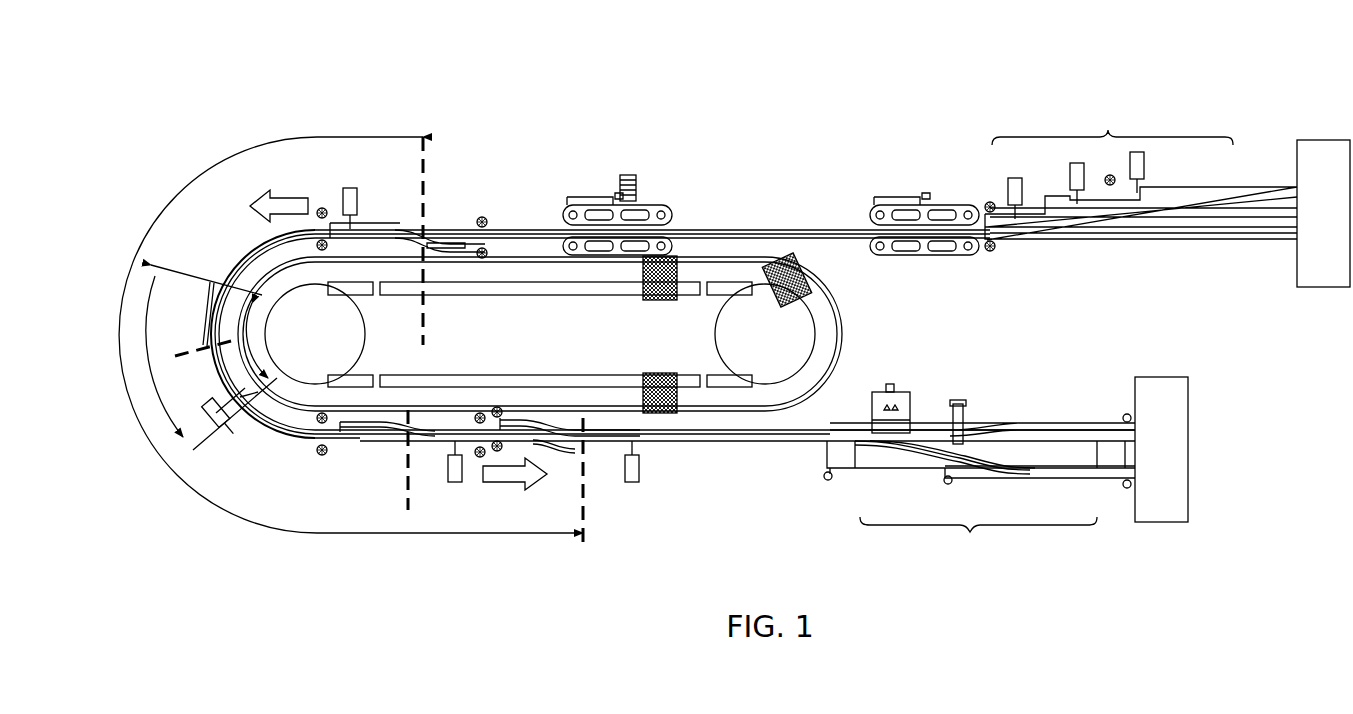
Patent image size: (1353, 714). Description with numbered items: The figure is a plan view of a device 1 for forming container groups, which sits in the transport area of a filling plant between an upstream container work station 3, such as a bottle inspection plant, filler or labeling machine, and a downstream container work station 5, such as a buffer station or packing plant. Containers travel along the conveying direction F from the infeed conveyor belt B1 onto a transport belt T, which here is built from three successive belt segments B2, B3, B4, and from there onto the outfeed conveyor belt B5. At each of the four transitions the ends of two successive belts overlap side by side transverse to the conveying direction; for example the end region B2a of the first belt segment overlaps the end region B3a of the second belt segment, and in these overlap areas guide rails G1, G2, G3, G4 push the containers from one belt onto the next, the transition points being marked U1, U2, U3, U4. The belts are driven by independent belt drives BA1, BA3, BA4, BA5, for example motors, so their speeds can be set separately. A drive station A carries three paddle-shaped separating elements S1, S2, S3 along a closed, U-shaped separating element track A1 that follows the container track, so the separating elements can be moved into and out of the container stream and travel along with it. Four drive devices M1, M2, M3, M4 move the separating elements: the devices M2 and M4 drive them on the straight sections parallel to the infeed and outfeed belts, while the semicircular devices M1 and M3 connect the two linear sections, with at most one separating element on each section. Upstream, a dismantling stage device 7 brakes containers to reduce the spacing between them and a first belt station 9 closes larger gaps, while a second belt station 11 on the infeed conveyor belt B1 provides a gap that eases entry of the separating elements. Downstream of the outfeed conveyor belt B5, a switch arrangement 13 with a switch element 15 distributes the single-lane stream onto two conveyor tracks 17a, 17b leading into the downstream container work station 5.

The device 1 is at (300, 97).
The upstream container work station 3 is at (1318, 152).
The downstream container work station 5 is at (1152, 384).
The dismantling stage device 7 is at (1141, 175).
The first belt station 9 is at (960, 206).
The second belt station 11 is at (652, 206).
The switch arrangement 13 is at (979, 499).
The switch element 15 is at (936, 428).
The conveyor track 17a is at (1116, 480).
The conveyor track 17b is at (1050, 422).
The drive station A is at (712, 340).
The separating element track A1 is at (832, 290).
The infeed conveyor belt B1 is at (514, 232).
The belt segment B2 is at (246, 263).
The end region B2a is at (266, 336).
The belt segment B3 is at (286, 437).
The end region B3a is at (203, 357).
The belt segment B4 is at (542, 442).
The outfeed conveyor belt B5 is at (746, 442).
The belt drive BA1 is at (352, 188).
The belt drive BA3 is at (456, 482).
The belt drive BA4 is at (633, 482).
The belt drive BA5 is at (896, 398).
The conveying direction F is at (287, 206).
The guide rail G1 is at (400, 230).
The guide rail G2 is at (208, 316).
The guide rail G3 is at (380, 446).
The guide rail G4 is at (556, 420).
The drive device M1 is at (346, 336).
The drive device M2 is at (456, 376).
The drive device M3 is at (812, 334).
The drive device M4 is at (504, 290).
The separating element S1 is at (662, 256).
The separating element S2 is at (794, 262).
The separating element S3 is at (676, 414).
The transport belt T is at (218, 512).
The transition point U1 is at (424, 251).
The transition point U2 is at (200, 365).
The transition point U3 is at (407, 471).
The transition point U4 is at (582, 495).